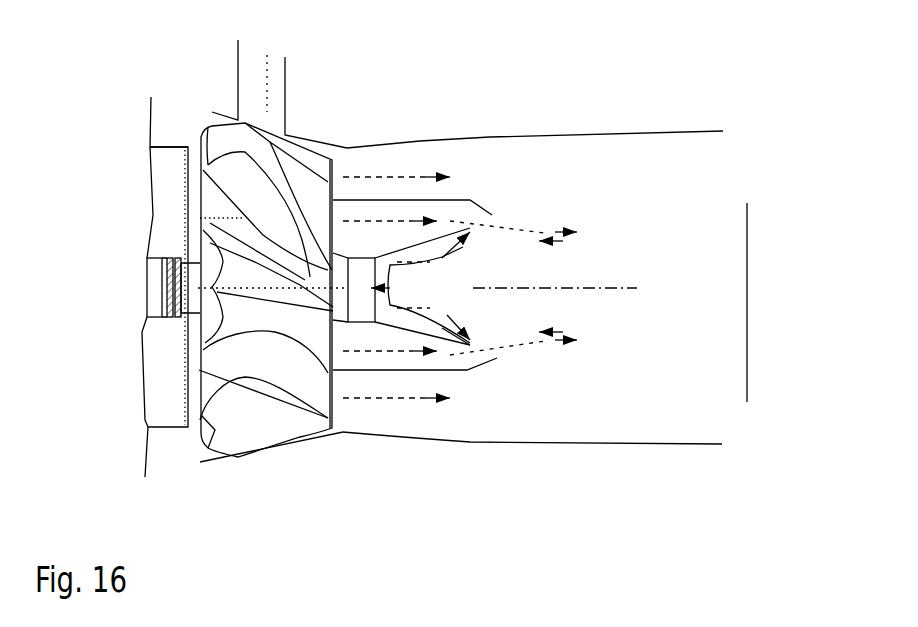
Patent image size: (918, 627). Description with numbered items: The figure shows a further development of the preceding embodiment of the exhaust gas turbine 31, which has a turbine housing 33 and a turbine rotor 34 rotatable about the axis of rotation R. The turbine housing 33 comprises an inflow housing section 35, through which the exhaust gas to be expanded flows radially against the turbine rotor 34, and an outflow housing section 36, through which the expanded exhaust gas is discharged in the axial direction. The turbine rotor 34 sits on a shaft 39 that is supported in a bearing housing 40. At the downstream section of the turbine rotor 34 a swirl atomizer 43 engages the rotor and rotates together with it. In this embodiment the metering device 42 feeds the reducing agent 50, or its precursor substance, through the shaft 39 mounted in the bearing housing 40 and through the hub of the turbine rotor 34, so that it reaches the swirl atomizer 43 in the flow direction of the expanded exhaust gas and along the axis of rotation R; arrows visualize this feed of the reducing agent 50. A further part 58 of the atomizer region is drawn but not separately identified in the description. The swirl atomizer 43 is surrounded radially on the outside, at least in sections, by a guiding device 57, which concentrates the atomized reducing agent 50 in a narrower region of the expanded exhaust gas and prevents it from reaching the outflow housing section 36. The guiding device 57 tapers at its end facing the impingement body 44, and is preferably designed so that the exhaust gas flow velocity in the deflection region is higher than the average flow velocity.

The exhaust gas turbine 31 is at (442, 107).
The turbine housing 33 is at (461, 251).
The inflow housing section 35 is at (287, 87).
The outflow housing section 36 is at (563, 133).
The turbine rotor 34 is at (282, 417).
The shaft 39 is at (143, 330).
The bearing housing 40 is at (168, 146).
The metering device 42 is at (183, 233).
The swirl atomizer 43 is at (442, 328).
The impingement body 44 is at (745, 348).
The reducing agent 50 is at (186, 192).
The guiding device 57 is at (469, 373).
The inner flow channel 58 is at (440, 311).
The axis of rotation R is at (620, 283).